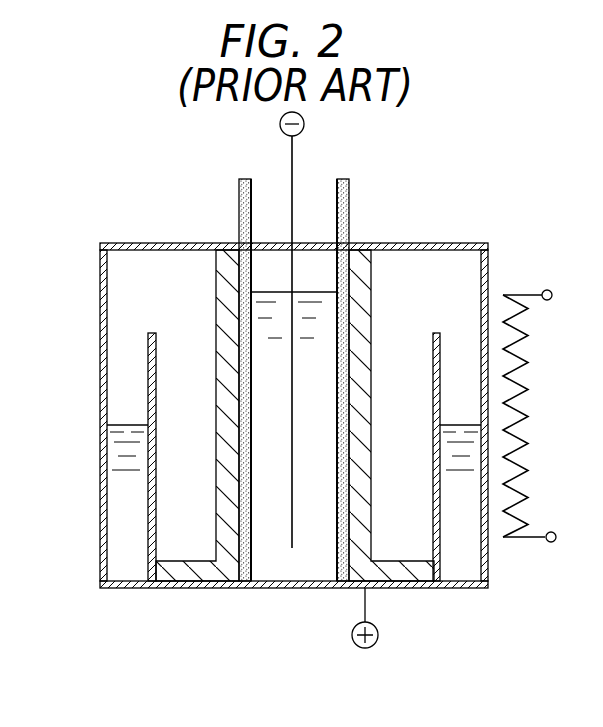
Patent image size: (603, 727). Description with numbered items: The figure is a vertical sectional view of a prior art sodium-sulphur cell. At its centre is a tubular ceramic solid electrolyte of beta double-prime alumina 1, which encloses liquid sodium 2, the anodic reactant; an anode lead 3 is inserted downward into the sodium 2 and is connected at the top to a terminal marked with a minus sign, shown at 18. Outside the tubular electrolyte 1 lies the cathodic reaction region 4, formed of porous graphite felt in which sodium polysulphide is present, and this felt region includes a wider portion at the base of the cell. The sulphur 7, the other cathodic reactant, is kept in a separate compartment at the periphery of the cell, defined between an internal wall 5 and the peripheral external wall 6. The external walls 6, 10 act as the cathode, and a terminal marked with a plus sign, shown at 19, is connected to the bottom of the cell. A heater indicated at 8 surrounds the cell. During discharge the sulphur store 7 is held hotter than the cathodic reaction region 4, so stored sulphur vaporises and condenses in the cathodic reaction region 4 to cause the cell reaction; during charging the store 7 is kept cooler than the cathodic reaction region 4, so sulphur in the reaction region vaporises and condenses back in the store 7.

The solid electrolyte 1 is at (345, 272).
The liquid sodium 2 is at (263, 574).
The anode lead 3 is at (292, 161).
The cathodic reaction region 4 is at (360, 330).
The internal wall 5 is at (148, 355).
The peripheral external wall 6 is at (100, 405).
The sulphur 7 is at (118, 512).
The heater 8 is at (520, 425).
The external wall 10 is at (138, 243).
The negative terminal 18 is at (304, 124).
The positive terminal 19 is at (352, 637).